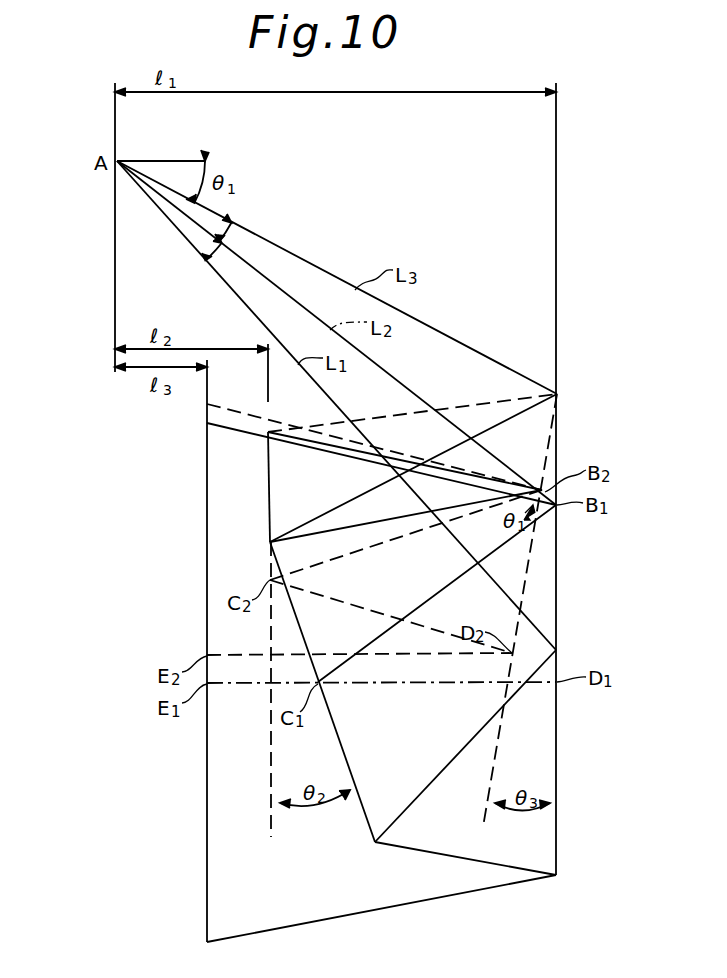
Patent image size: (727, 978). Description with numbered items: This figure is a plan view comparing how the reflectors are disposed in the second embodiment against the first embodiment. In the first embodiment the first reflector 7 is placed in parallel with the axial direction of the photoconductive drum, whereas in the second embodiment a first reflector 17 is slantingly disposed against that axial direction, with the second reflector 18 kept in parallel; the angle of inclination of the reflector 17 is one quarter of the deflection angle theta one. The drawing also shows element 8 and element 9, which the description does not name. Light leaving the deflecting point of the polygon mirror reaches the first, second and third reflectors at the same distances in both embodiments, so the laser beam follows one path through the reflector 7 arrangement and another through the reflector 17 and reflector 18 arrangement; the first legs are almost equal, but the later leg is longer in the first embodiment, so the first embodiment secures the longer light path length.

The first reflector 7 is at (557, 855).
The prism 8 is at (358, 817).
The housing side plate 9 is at (207, 895).
The first reflector 17 is at (483, 825).
The second reflector 18 is at (270, 830).